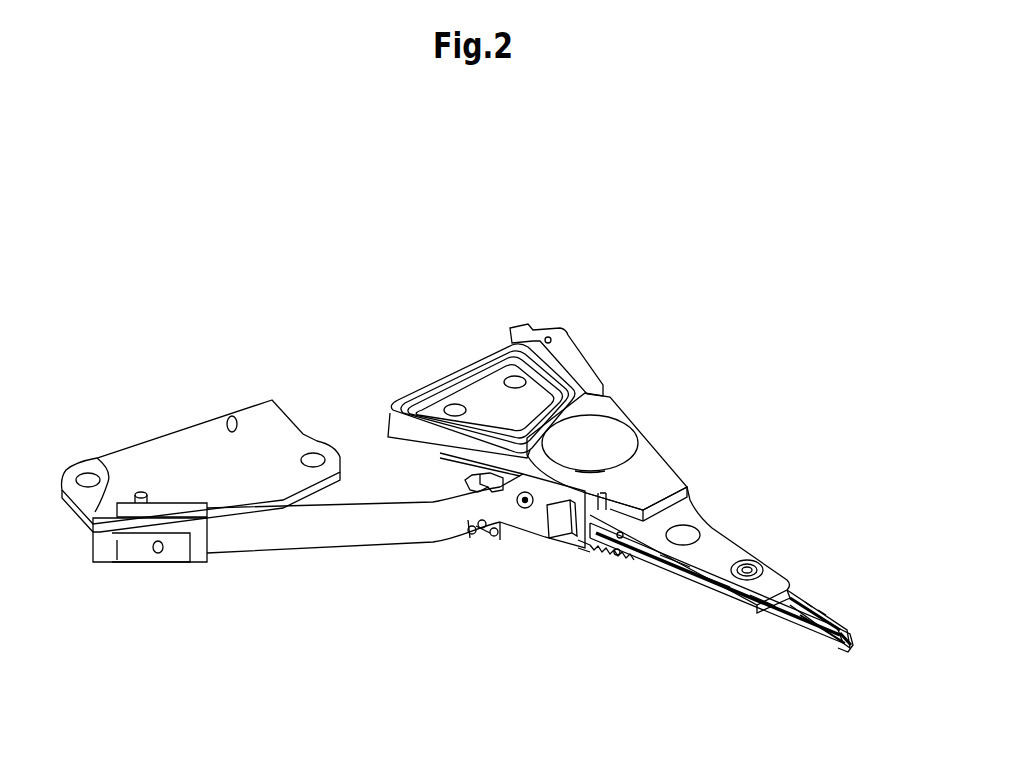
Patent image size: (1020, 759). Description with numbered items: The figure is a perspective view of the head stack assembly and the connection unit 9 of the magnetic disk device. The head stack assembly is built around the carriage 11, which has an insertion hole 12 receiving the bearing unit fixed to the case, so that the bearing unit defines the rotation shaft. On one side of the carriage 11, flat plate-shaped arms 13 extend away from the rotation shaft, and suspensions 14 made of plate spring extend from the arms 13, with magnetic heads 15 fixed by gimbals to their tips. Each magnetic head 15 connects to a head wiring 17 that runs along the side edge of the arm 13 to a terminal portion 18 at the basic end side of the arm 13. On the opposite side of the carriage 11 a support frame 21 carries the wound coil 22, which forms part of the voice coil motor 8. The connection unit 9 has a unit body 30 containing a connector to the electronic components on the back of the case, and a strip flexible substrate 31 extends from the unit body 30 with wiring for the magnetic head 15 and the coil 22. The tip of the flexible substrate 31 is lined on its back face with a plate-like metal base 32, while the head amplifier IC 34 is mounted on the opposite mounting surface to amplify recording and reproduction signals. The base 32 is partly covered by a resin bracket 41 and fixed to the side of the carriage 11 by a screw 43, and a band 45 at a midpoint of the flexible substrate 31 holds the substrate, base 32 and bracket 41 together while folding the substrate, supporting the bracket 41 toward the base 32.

The voice coil motor 8 is at (668, 175).
The connection unit 9 is at (225, 580).
The carriage 11 is at (679, 480).
The insertion hole 12 is at (620, 440).
The arm 13 is at (718, 545).
The suspension 14 is at (801, 592).
The magnetic head 15 is at (853, 625).
The head wiring 17 is at (663, 579).
The terminal portion 18 is at (626, 577).
The support frame 21 is at (566, 350).
The coil 22 is at (463, 345).
The unit body 30 is at (178, 420).
The flexible substrate 31 is at (305, 535).
The base 32 is at (667, 480).
The head amplifier IC 34 is at (560, 528).
The bracket 41 is at (476, 463).
The screw 43 is at (521, 508).
The band 45 is at (466, 529).